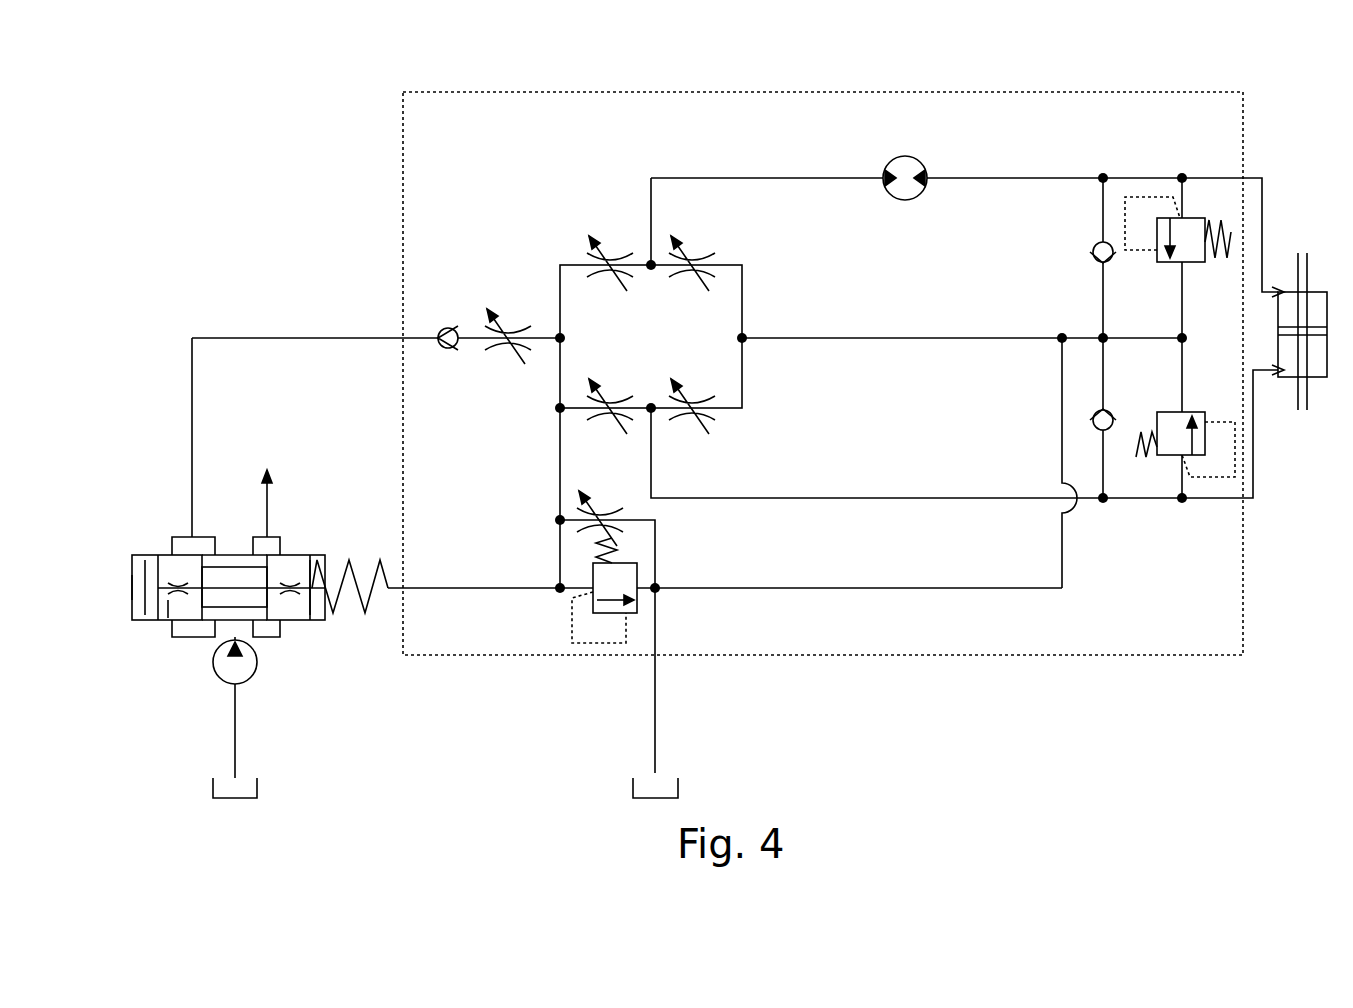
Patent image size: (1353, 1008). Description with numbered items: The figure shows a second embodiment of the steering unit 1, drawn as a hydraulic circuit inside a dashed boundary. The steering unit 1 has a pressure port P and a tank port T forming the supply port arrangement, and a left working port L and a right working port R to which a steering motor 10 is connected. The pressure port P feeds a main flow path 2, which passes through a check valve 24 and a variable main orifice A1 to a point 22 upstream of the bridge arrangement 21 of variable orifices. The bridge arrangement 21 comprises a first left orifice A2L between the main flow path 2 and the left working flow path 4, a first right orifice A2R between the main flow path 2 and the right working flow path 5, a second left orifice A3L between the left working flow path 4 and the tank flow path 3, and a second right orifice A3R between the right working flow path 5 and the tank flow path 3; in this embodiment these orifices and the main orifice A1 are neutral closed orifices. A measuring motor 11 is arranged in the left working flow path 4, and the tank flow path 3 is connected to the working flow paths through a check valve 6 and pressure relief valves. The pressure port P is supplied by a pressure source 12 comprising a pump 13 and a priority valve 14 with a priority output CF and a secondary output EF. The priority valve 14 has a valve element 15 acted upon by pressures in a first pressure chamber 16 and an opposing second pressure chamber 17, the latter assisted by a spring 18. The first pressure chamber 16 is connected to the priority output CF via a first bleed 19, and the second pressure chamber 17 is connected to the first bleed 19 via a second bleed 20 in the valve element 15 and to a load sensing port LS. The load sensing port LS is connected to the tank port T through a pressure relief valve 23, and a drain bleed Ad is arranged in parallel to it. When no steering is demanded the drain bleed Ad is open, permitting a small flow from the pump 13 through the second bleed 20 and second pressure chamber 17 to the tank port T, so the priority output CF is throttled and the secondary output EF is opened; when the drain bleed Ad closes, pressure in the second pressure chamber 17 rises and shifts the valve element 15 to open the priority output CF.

The steering unit 1 is at (1243, 100).
The main flow path 2 is at (470, 338).
The tank flow path 3 is at (902, 340).
The left working flow path 4 is at (1017, 178).
The right working flow path 5 is at (1000, 500).
The check valve 6 is at (1162, 338).
The steering motor 10 is at (1318, 292).
The measuring motor 11 is at (905, 168).
The pressure source 12 is at (168, 450).
The pump 13 is at (222, 665).
The priority valve 14 is at (132, 603).
The valve element 15 is at (167, 618).
The first pressure chamber 16 is at (142, 575).
The second pressure chamber 17 is at (326, 563).
The spring 18 is at (340, 557).
The first bleed 19 is at (178, 580).
The second bleed 20 is at (288, 597).
The bridge arrangement 21 is at (535, 228).
The point upstream the bridge arrangement 22 is at (557, 343).
The pressure relief valve 23 is at (610, 609).
The check valve 24 is at (448, 349).
The pressure port P is at (402, 338).
The tank port T is at (655, 655).
The left working port L is at (1243, 178).
The right working port R is at (1243, 499).
The load sensing port LS is at (400, 595).
The priority output CF is at (202, 537).
The secondary output EF is at (280, 537).
The variable main orifice A1 is at (509, 330).
The first left orifice A2L is at (608, 274).
The second left orifice A3L is at (690, 274).
The first right orifice A2R is at (603, 416).
The second right orifice A3R is at (688, 416).
The drain bleed Ad is at (605, 590).